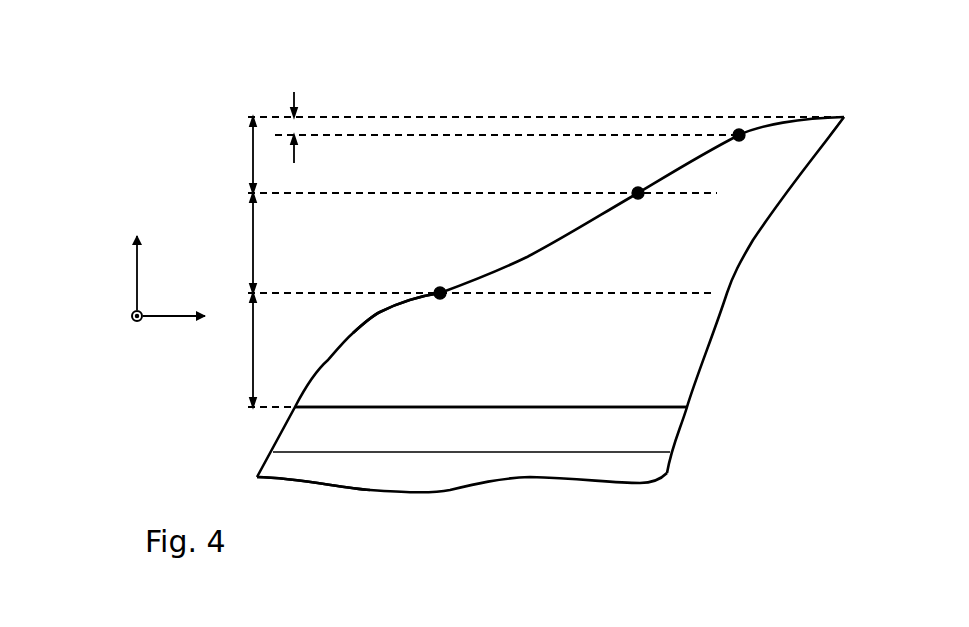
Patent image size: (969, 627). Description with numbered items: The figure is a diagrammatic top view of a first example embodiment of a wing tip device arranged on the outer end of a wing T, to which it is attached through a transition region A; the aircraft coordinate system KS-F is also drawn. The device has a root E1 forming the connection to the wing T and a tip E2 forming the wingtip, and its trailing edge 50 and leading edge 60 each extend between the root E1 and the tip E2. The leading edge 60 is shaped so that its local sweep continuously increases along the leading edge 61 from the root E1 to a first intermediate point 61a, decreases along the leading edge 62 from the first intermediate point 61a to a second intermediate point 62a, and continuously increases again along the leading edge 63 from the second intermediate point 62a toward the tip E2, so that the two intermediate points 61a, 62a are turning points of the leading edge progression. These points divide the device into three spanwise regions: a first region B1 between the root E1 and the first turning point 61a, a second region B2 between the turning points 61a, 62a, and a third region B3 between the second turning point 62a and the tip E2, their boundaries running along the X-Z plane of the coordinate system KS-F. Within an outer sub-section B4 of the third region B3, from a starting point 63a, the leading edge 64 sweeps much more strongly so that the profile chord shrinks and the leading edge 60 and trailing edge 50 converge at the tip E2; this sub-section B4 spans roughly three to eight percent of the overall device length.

The trailing edge 50 is at (715, 327).
The leading edge 60 is at (355, 333).
The leading edge (first progression) 61 is at (383, 312).
The first intermediate point 61a is at (440, 299).
The leading edge (second progression) 62 is at (527, 257).
The second intermediate point 62a is at (630, 185).
The leading edge (third progression) 63 is at (688, 143).
The starting point of the sub-section 63a is at (741, 128).
The leading edge sub-section 64 is at (750, 131).
The root E1 is at (702, 408).
The tip E2 is at (844, 116).
The wing T is at (412, 477).
The transition region A is at (465, 433).
The aircraft coordinate system KS-F is at (100, 276).
The first region B1 is at (236, 350).
The second region B2 is at (236, 243).
The third region B3 is at (236, 155).
The outer sub-section B4 is at (310, 127).